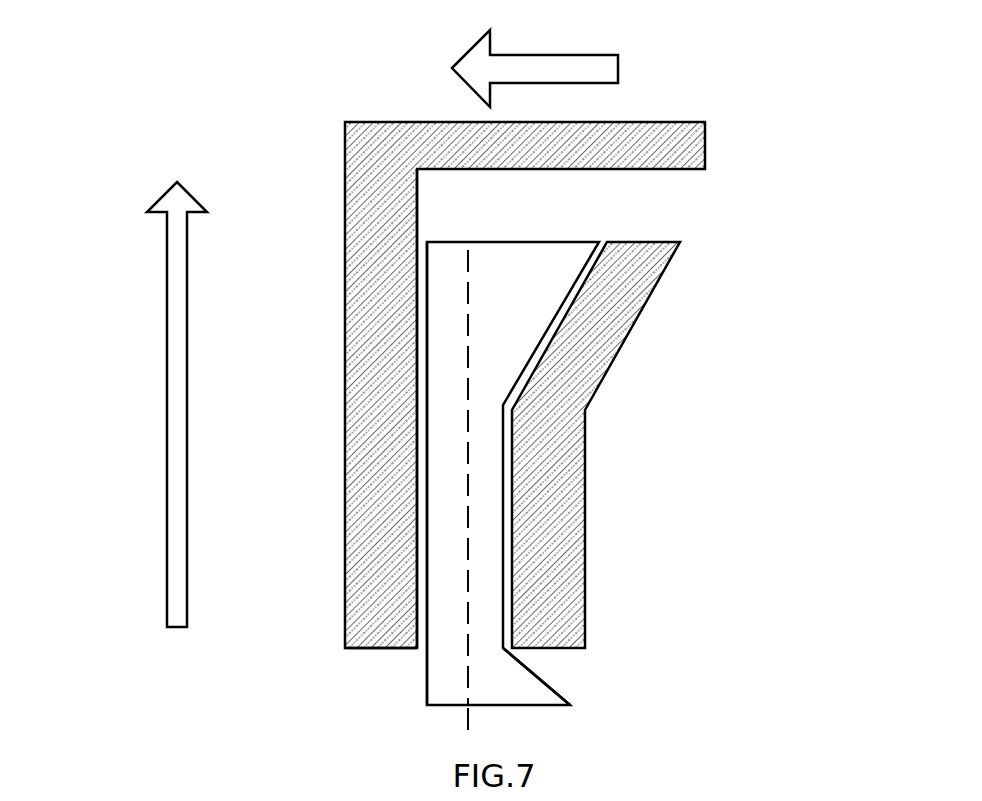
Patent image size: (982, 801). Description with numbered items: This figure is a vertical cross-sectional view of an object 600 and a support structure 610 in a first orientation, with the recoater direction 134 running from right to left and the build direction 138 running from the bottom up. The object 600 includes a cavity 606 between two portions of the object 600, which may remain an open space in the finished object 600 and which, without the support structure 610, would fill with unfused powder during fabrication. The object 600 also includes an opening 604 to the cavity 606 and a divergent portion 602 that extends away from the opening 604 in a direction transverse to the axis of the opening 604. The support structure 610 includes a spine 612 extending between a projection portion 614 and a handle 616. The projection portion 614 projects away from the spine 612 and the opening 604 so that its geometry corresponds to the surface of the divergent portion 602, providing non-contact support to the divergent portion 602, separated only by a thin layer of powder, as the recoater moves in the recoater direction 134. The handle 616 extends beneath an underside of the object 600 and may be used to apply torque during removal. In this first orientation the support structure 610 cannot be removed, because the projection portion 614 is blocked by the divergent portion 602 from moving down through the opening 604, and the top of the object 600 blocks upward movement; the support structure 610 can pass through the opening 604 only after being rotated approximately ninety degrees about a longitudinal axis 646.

The recoater direction 134 is at (458, 45).
The build direction 138 is at (167, 330).
The object 600 is at (340, 123).
The divergent portion 602 is at (632, 328).
The opening 604 is at (417, 648).
The cavity 606 is at (425, 210).
The support structure 610 is at (429, 322).
The spine 612 is at (450, 460).
The projection portion 614 is at (555, 241).
The handle 616 is at (555, 690).
The longitudinal axis 646 is at (463, 723).